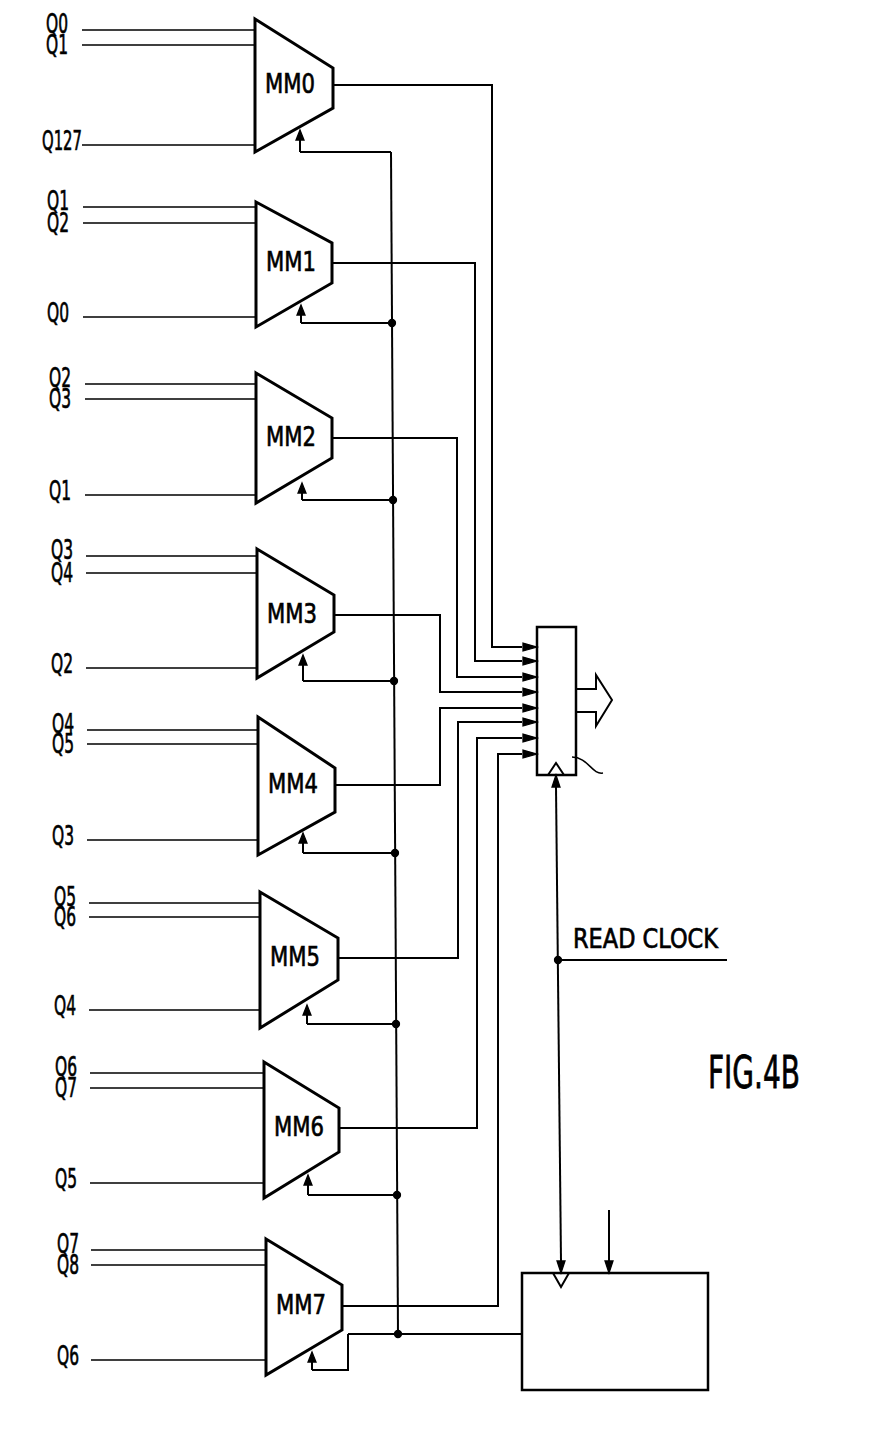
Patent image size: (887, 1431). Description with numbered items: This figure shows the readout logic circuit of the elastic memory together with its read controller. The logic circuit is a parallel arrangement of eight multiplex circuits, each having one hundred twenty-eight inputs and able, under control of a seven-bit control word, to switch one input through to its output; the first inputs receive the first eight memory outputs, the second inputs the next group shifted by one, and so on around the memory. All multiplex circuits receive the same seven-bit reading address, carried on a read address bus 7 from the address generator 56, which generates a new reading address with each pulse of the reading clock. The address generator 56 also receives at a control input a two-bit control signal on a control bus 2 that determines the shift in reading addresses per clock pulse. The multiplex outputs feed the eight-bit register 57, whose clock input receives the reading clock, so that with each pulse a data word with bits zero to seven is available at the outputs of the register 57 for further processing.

The 8-bit register 57 is at (556, 632).
The address generator 56 is at (674, 1283).
The 7-bit read address bus 7 is at (450, 1342).
The 2-bit input to address generator 2 is at (599, 1240).